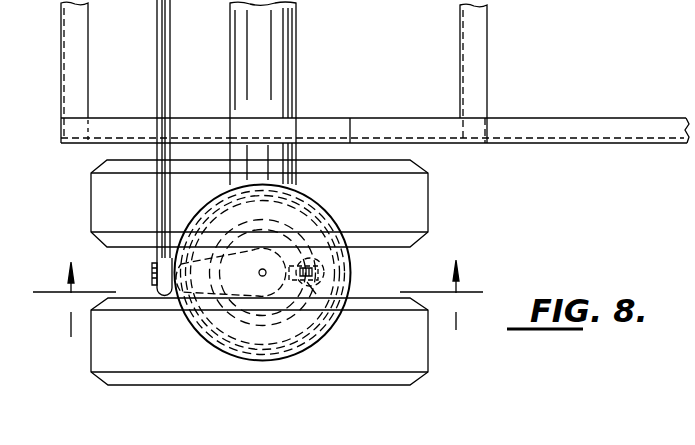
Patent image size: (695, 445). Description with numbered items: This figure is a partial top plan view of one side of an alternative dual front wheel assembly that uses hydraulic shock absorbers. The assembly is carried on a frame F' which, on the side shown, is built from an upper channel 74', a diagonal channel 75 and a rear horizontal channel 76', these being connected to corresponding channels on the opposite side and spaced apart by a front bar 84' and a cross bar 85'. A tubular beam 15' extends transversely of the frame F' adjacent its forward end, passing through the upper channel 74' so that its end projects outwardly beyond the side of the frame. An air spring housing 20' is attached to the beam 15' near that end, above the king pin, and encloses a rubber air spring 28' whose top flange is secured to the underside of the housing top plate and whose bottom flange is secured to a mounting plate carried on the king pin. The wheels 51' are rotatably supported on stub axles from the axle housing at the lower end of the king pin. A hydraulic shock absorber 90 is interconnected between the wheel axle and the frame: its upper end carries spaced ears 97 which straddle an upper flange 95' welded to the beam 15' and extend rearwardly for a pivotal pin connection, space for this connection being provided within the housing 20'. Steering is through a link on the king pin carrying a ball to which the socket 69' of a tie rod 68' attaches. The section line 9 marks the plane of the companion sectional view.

The tubular beam 15' is at (282, 93).
The air spring housing 20' is at (290, 273).
The rubber air spring 28' is at (241, 273).
The wheels 51' is at (262, 277).
The tie rod 68' is at (138, 129).
The socket 69' is at (136, 277).
The upper channel 74' is at (145, 117).
The diagonal channel 75 is at (370, 127).
The rear horizontal channel 76' is at (574, 119).
The front bar 84' is at (54, 71).
The cross bar 85' is at (493, 73).
The hydraulic shock absorber 90 is at (317, 292).
The upper flange 95' is at (232, 283).
The spaced ears 97 is at (290, 244).
The frame F' is at (610, 160).
The section line 9 is at (258, 298).